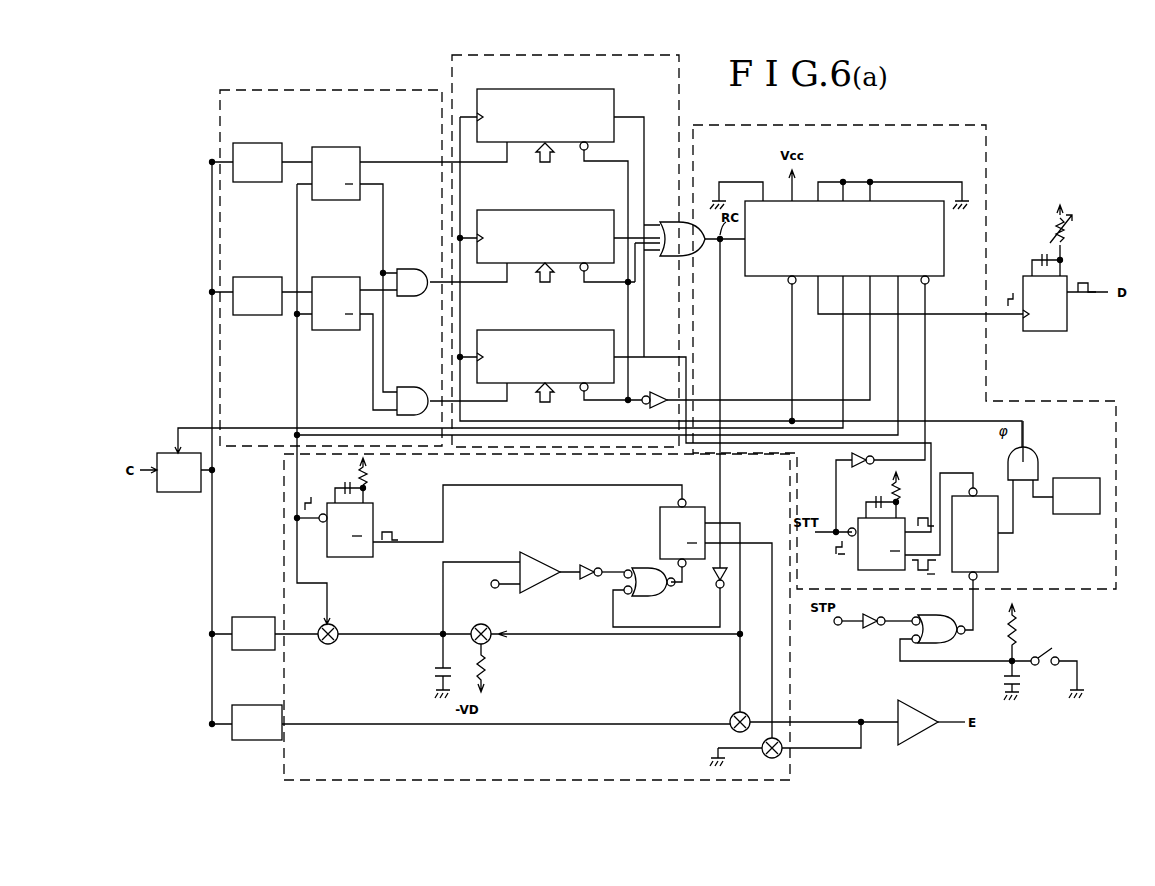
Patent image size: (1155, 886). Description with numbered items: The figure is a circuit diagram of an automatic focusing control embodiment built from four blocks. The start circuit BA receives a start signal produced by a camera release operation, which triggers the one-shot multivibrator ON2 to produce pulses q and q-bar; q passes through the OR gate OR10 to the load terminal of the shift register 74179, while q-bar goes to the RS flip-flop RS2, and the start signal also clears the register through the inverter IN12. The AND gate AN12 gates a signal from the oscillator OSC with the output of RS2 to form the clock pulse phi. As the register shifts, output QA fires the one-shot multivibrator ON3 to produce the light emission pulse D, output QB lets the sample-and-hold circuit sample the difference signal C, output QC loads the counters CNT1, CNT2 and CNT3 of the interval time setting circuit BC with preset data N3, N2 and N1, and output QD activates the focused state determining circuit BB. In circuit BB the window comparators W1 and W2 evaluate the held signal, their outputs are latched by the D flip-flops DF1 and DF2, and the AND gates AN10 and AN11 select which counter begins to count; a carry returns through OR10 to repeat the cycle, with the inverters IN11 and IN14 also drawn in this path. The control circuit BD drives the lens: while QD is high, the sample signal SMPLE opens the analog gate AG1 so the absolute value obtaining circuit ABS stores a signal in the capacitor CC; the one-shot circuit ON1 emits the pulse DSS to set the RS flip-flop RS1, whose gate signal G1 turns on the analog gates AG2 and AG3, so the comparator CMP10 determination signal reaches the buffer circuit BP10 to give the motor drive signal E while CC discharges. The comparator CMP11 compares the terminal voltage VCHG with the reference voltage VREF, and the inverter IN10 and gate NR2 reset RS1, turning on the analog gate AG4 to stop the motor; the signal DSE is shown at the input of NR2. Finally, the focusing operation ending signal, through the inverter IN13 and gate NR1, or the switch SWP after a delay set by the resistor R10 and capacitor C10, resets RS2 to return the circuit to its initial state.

The focused state determining circuit BB is at (256, 90).
The interval time setting circuit BC is at (452, 74).
The start circuit BA is at (1080, 401).
The control circuit BD is at (790, 775).
The one-shot pulse DSS is at (537, 617).
The window comparator W1 is at (257, 162).
The window comparator W2 is at (257, 296).
The D flip-flop DF1 is at (333, 147).
The D flip-flop DF2 is at (333, 277).
The AND gate AN10 is at (416, 273).
The AND gate AN11 is at (416, 392).
The AND gate AN12 is at (1036, 458).
The counter CNT1 is at (545, 109).
The counter CNT2 is at (545, 231).
The counter CNT3 is at (545, 352).
The preset datum N1 is at (545, 402).
The preset datum N2 is at (545, 283).
The preset datum N3 is at (545, 163).
The OR gate OR10 is at (682, 239).
The inverter IN10 is at (586, 582).
The inverter IN11 is at (654, 392).
The inverter IN12 is at (850, 455).
The inverter IN13 is at (872, 628).
The inverter IN14 is at (717, 586).
The shift register 74179 is at (844, 242).
The one-shot multivibrator ON3 is at (1050, 331).
The one-shot circuit ON1 is at (379, 514).
The one-shot multivibrator ON2 is at (862, 560).
The RS flip-flop RS1 is at (660, 523).
The RS flip-flop RS2 is at (998, 552).
The gate NR1 is at (940, 615).
The gate NR2 is at (644, 596).
The comparator CMP11 is at (533, 552).
The comparator CMP10 is at (257, 722).
The detection signal DSE is at (624, 568).
The reference voltage VREF is at (497, 605).
The terminal voltage VCHG is at (437, 636).
The capacitor CC is at (432, 679).
The sample signal SMPLE is at (351, 612).
The analog gate AG1 is at (328, 646).
The analog gate AG2 is at (492, 644).
The analog gate AG3 is at (730, 726).
The analog gate AG4 is at (763, 752).
The gate signal G1 is at (721, 682).
The buffer circuit BP10 is at (918, 728).
The absolute value obtaining circuit ABS is at (253, 633).
The oscillator OSC is at (1076, 496).
The resistor R10 is at (1020, 632).
The capacitor C10 is at (1002, 682).
The switch SWP is at (1053, 656).